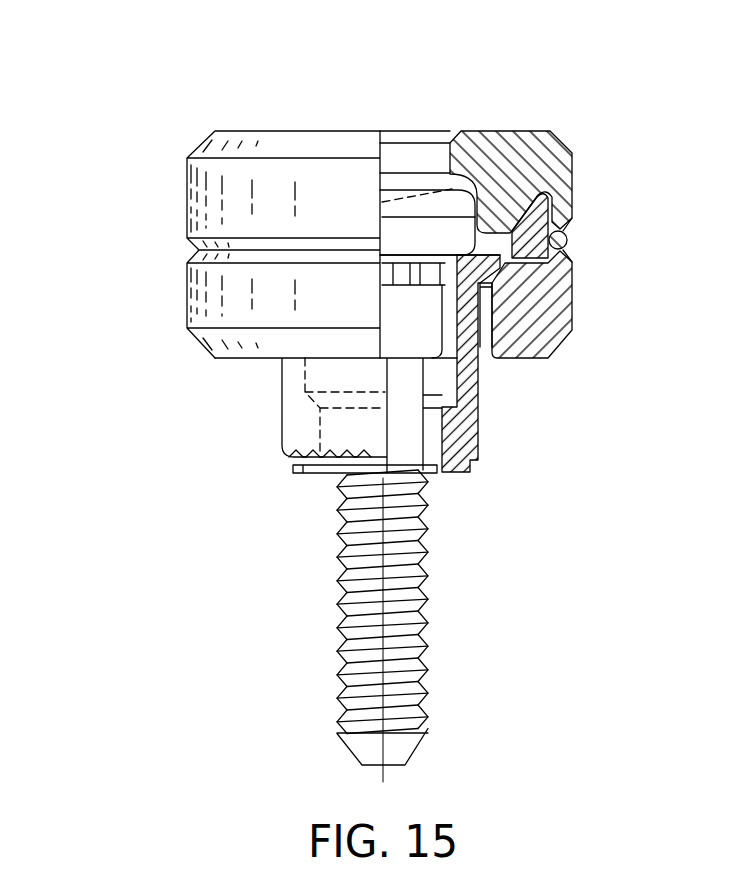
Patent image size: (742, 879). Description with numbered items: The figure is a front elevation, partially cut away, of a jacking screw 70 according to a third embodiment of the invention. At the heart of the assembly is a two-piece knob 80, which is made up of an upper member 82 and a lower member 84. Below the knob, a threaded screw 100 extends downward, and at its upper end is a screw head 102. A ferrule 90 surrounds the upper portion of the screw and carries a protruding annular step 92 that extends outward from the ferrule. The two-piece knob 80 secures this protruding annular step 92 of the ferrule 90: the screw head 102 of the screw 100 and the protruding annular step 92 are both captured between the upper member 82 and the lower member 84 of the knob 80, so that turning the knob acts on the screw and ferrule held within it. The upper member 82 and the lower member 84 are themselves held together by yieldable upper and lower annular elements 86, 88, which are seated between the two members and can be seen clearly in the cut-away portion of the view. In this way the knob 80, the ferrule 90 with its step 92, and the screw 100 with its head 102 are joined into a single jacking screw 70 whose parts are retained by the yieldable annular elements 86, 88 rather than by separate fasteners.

The jacking screw 70 is at (578, 126).
The two-piece knob 80 is at (187, 200).
The upper member 82 is at (572, 168).
The lower member 84 is at (572, 313).
The upper annular element 86 is at (552, 240).
The lower annular element 88 is at (561, 184).
The ferrule 90 is at (465, 425).
The protruding annular step 92 is at (473, 275).
The screw 100 is at (428, 612).
The screw head 102 is at (437, 207).